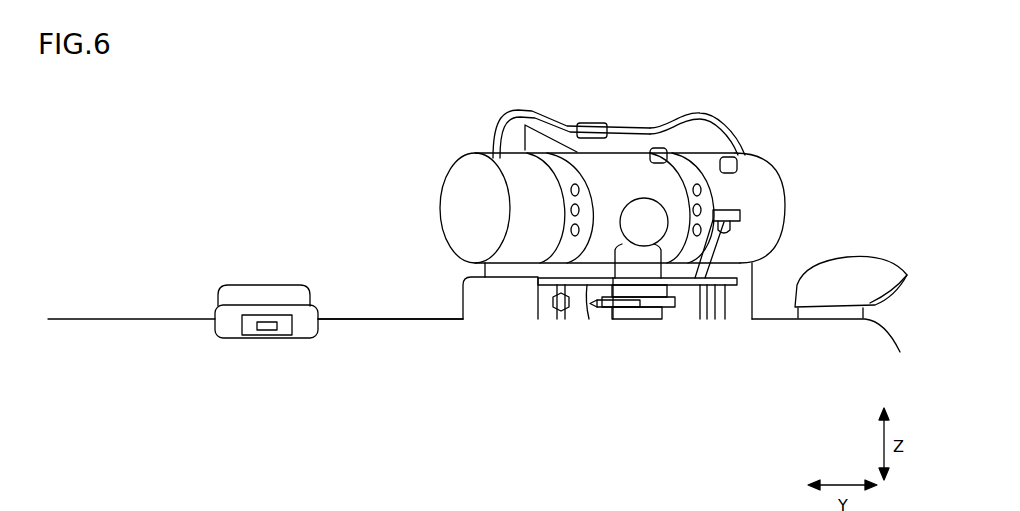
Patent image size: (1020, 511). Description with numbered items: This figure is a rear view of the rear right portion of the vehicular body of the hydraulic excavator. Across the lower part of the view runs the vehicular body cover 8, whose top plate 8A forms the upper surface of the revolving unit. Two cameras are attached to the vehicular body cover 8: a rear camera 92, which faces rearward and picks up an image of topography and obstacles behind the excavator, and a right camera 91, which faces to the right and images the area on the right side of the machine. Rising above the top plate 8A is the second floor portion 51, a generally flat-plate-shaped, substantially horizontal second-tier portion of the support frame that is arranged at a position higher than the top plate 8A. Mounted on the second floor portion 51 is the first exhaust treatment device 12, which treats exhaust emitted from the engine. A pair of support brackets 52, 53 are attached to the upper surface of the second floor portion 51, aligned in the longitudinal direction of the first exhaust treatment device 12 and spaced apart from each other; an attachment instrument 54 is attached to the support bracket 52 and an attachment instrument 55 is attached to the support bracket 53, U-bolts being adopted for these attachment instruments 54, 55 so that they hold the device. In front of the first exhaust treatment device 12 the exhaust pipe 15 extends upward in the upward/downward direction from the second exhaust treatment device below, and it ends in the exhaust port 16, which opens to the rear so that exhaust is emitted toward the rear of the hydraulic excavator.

The vehicular body cover 8 is at (150, 358).
The top plate 8A is at (360, 318).
The first exhaust treatment device 12 is at (748, 187).
The exhaust pipe 15 is at (650, 262).
The exhaust port 16 is at (637, 232).
The second floor portion 51 is at (583, 330).
The support bracket 52 is at (685, 268).
The support bracket 53 is at (545, 322).
The attachment instrument 54 is at (710, 150).
The attachment instrument 55 is at (592, 152).
The right camera 91 is at (867, 268).
The rear camera 92 is at (268, 296).